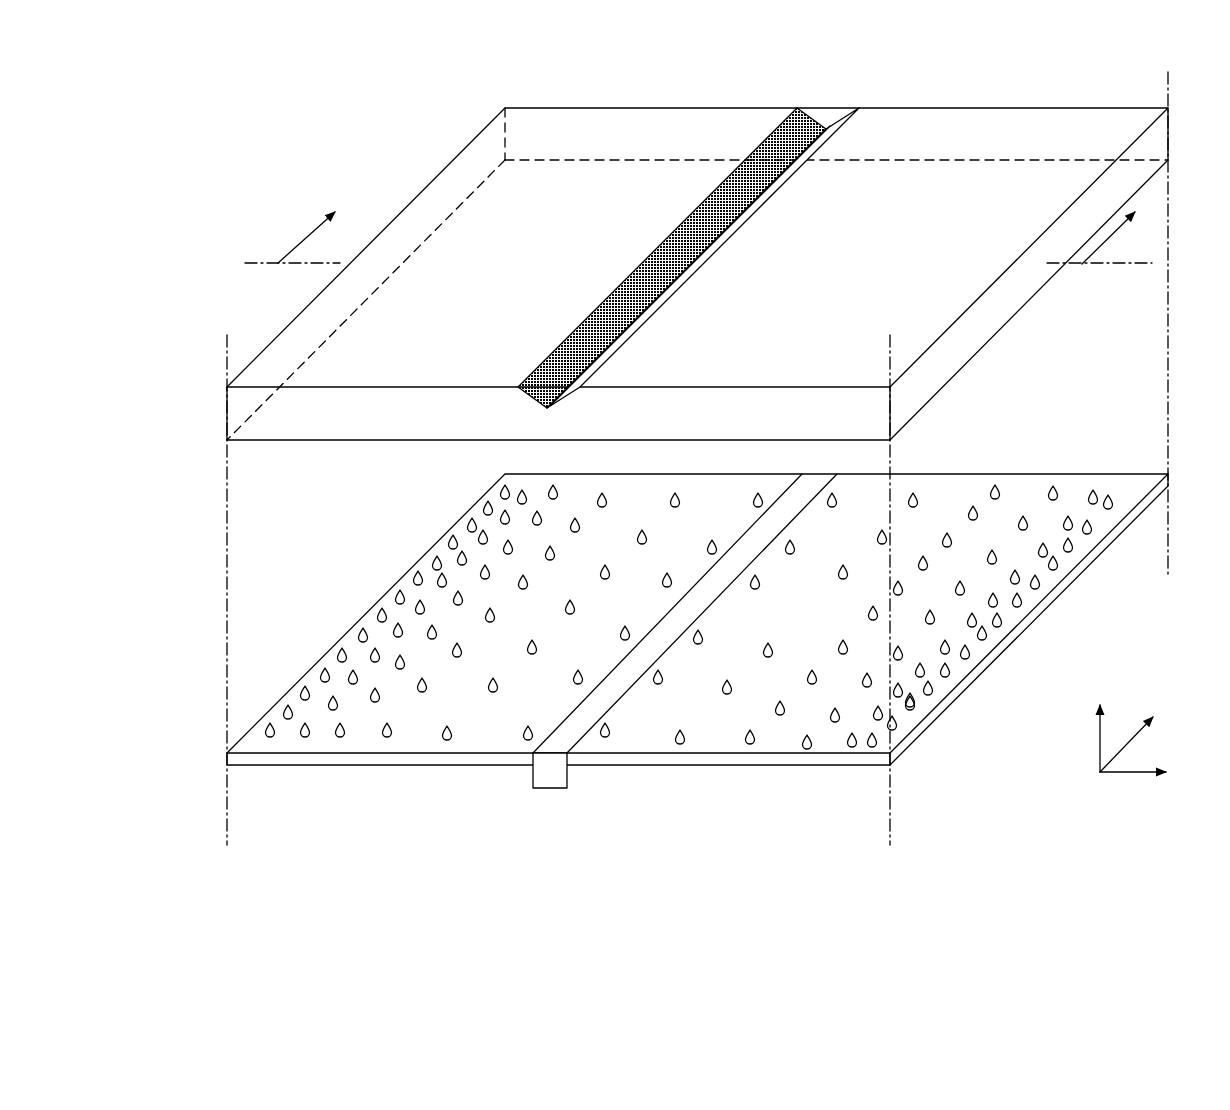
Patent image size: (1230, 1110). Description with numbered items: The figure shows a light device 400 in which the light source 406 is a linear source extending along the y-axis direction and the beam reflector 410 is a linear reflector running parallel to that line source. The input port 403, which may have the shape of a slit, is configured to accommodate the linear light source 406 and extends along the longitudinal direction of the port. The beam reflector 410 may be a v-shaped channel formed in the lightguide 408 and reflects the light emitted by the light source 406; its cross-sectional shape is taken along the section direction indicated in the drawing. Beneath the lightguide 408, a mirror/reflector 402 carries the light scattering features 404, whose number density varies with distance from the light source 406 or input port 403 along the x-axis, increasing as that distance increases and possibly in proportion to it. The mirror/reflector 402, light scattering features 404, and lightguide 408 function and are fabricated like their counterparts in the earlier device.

The light device 400 is at (200, 63).
The mirror/reflector 402 is at (315, 762).
The input port 403 is at (572, 769).
The light scattering features 404 is at (748, 788).
The light source 406 is at (553, 777).
The lightguide 408 is at (441, 178).
The beam reflector 410 is at (645, 257).